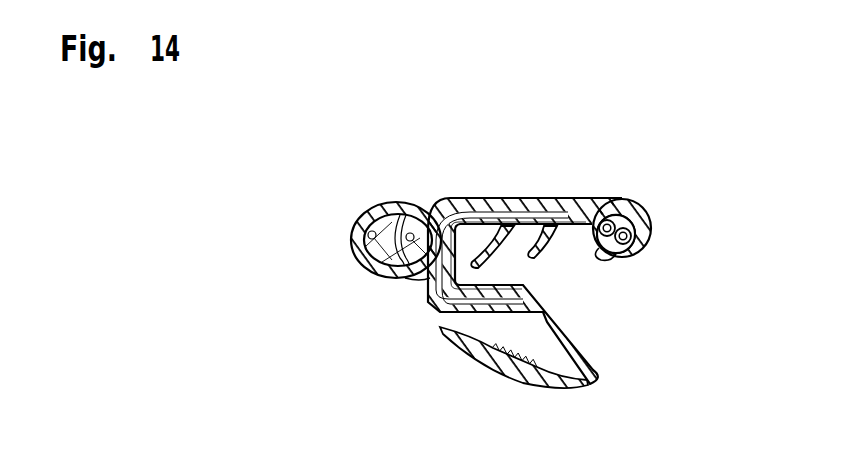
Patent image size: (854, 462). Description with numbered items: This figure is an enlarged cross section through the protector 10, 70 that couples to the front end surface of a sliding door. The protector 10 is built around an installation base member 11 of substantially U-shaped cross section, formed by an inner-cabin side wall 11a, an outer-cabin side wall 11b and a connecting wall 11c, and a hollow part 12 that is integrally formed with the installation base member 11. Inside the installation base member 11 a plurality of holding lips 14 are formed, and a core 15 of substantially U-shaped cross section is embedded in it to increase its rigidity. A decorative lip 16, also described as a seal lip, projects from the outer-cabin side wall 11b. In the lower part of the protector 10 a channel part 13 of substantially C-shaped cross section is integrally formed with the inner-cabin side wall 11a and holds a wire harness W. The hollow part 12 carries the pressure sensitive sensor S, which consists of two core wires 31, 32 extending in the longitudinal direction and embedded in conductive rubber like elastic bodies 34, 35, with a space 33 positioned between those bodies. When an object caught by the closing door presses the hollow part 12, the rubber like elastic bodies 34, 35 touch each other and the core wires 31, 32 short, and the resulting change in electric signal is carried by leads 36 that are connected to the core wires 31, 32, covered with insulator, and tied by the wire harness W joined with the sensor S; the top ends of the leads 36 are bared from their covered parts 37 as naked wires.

The protector 10 is at (510, 243).
The seal assembly with wire 70 is at (510, 243).
The installation base member 11 is at (484, 277).
The inner-cabin side wall 11a is at (493, 200).
The outer-cabin side wall 11b is at (468, 334).
The connecting wall 11c is at (430, 296).
The hollow part 12 is at (412, 230).
The channel part 13 is at (655, 206).
The holding lips 14 is at (547, 258).
The core 15 is at (440, 304).
The decorative lip 16 is at (499, 376).
The core wire 31 is at (372, 238).
The core wire 32 is at (408, 212).
The space 33 is at (420, 280).
The rubber like elastic body 34 is at (375, 270).
The rubber like elastic body 35 is at (422, 210).
The leads 36 is at (637, 248).
The covered parts 37 is at (603, 205).
The sensor S is at (356, 246).
The wire harness W is at (655, 206).